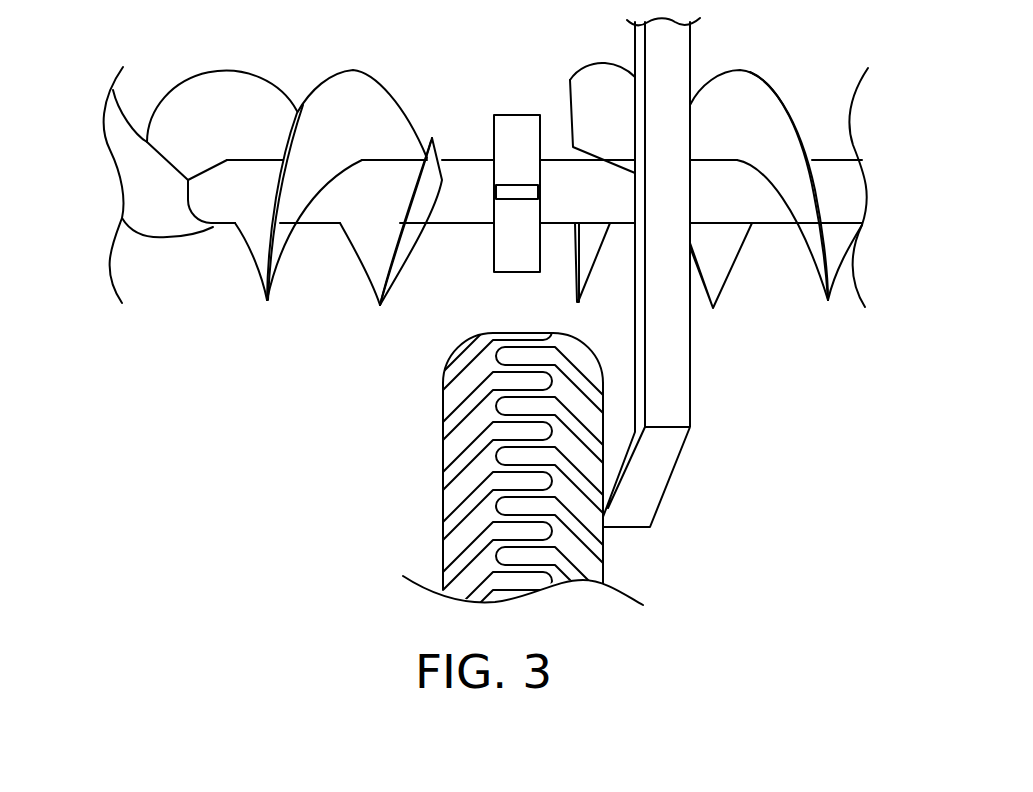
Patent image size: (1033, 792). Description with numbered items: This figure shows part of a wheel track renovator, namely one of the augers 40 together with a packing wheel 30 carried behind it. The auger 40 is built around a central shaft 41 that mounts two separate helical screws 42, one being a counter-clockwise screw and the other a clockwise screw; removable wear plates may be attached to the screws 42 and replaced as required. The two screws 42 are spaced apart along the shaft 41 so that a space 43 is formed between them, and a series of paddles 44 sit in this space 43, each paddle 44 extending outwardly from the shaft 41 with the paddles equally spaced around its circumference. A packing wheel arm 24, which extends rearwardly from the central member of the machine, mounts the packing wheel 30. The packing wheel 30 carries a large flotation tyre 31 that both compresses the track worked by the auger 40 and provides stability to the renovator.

The packing wheel arm 24 is at (677, 380).
The packing wheel 30 is at (585, 557).
The flotation tyre 31 is at (452, 538).
The auger 40 is at (487, 192).
The central shaft 41 is at (462, 172).
The helical screw 42 is at (353, 90).
The space 43 is at (541, 111).
The paddle 44 is at (514, 128).